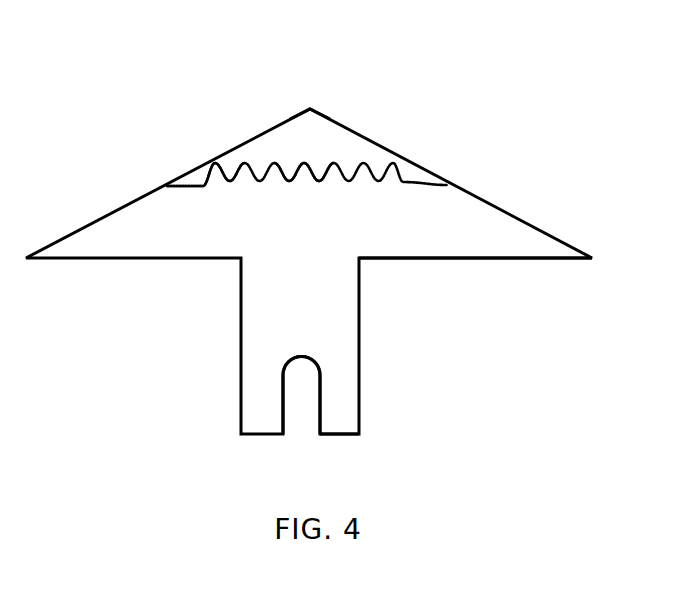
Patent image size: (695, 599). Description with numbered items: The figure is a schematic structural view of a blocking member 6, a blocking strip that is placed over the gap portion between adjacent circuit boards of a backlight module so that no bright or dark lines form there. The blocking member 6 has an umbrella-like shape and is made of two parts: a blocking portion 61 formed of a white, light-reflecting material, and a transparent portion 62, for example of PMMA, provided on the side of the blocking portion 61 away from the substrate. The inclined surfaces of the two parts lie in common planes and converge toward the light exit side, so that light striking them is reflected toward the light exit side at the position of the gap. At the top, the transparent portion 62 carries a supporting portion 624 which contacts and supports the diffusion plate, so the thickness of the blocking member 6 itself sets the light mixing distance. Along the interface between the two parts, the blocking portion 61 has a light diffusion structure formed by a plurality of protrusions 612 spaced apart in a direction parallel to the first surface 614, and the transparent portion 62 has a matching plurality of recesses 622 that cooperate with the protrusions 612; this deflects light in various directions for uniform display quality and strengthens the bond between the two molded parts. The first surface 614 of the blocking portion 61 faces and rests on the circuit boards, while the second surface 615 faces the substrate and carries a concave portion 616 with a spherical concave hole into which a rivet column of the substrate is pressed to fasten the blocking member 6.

The blocking member 6 is at (310, 14).
The blocking portion 61 is at (492, 240).
The protrusions 612 is at (243, 162).
The first surface 614 is at (468, 260).
The second surface 615 is at (343, 436).
The concave portion 616 is at (302, 375).
The transparent portion 62 is at (360, 153).
The recesses 622 is at (340, 162).
The supporting portion 624 is at (310, 108).